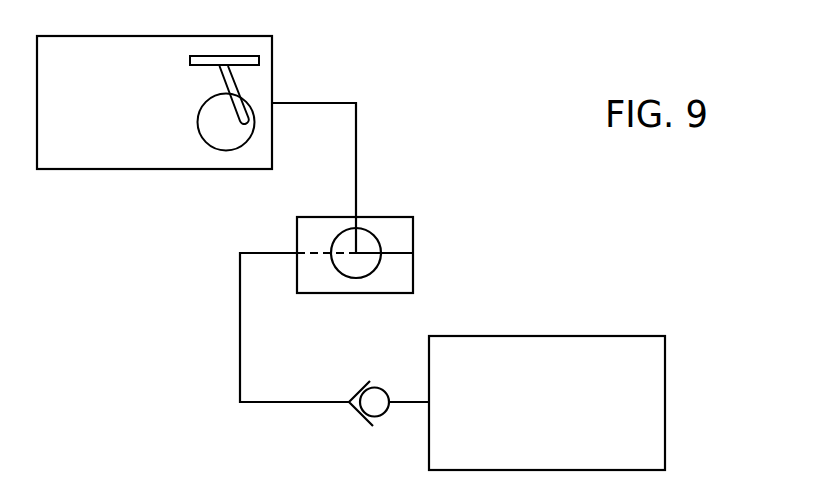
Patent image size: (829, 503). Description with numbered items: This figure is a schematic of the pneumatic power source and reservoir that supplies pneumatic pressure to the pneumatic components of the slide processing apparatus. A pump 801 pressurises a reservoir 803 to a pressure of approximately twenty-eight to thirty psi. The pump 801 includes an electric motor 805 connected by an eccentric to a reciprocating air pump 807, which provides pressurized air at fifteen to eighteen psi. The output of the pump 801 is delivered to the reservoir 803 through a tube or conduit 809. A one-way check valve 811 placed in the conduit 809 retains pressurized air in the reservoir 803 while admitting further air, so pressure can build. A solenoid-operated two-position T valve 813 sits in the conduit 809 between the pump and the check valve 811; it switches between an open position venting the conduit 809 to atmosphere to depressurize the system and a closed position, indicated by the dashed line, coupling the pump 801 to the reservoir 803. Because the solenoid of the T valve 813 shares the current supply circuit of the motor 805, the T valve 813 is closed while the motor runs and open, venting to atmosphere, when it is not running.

The pump 801 is at (272, 68).
The reservoir 803 is at (665, 363).
The electric motor 805 is at (221, 131).
The reciprocating air pump 807 is at (230, 62).
The conduit 809 is at (357, 153).
The one-way check valve 811 is at (362, 417).
The solenoid-operated two-position T valve 813 is at (413, 237).